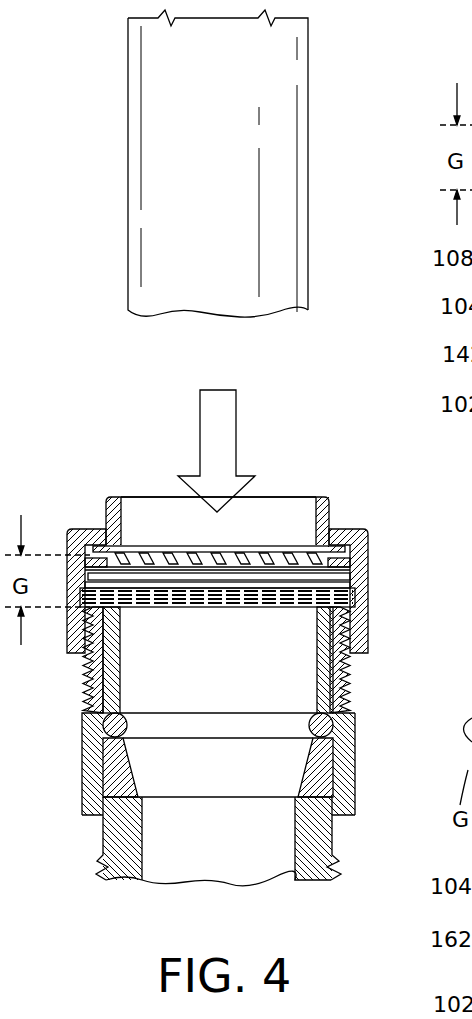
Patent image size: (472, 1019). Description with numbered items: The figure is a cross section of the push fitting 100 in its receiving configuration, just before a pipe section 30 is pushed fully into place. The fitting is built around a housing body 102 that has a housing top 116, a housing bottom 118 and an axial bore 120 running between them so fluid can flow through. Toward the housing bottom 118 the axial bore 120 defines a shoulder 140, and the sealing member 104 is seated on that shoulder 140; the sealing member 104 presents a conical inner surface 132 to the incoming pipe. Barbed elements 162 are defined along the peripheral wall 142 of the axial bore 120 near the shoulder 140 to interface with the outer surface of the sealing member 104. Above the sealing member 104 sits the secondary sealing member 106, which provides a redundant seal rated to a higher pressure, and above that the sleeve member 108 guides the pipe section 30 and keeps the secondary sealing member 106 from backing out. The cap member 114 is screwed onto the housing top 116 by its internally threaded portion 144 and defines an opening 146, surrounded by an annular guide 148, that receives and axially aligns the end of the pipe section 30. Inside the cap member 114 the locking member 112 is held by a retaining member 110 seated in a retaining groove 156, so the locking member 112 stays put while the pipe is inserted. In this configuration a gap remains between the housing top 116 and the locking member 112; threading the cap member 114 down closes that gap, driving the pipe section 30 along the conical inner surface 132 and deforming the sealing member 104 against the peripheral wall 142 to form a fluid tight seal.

The pipe section 30 is at (233, 124).
The push fitting 100 is at (77, 467).
The housing body 102 is at (93, 845).
The sealing member 104 is at (103, 764).
The secondary sealing member 106 is at (337, 716).
The sleeve member 108 is at (100, 666).
The retaining member 110 is at (348, 560).
The locking member 112 is at (148, 545).
The cap member 114 is at (345, 503).
The housing top 116 is at (350, 613).
The housing bottom 118 is at (270, 892).
The axial bore 120 is at (235, 667).
The conical inner surface 132 is at (335, 747).
The shoulder 140 is at (340, 795).
The peripheral wall 142 is at (92, 702).
The internally threaded portion 144 is at (350, 592).
The opening 146 is at (317, 515).
The annular guide 148 is at (308, 513).
The retaining groove 156 is at (340, 546).
The barbed elements 162 is at (92, 782).